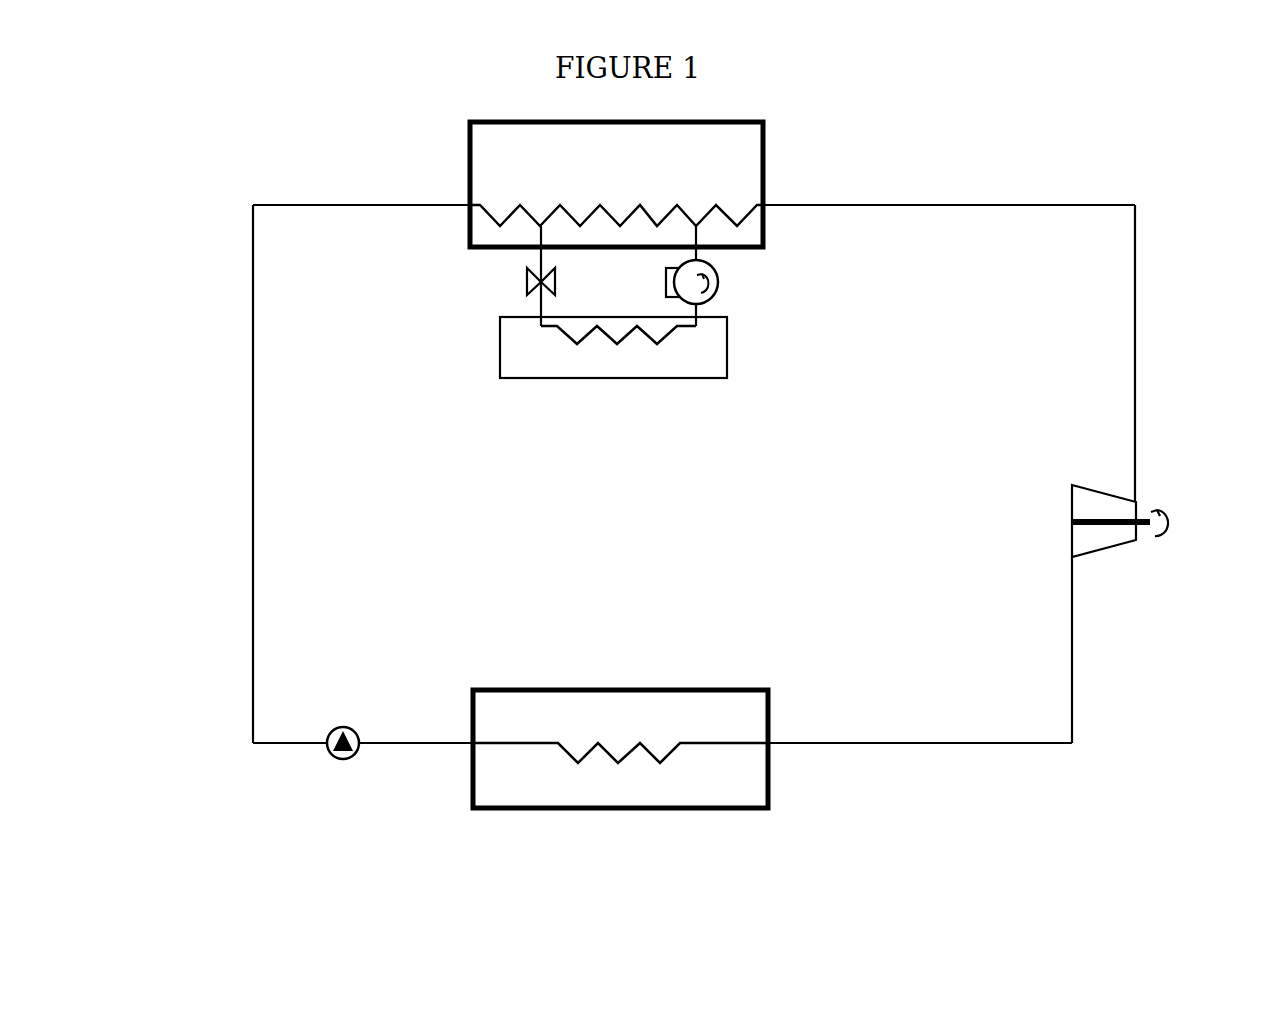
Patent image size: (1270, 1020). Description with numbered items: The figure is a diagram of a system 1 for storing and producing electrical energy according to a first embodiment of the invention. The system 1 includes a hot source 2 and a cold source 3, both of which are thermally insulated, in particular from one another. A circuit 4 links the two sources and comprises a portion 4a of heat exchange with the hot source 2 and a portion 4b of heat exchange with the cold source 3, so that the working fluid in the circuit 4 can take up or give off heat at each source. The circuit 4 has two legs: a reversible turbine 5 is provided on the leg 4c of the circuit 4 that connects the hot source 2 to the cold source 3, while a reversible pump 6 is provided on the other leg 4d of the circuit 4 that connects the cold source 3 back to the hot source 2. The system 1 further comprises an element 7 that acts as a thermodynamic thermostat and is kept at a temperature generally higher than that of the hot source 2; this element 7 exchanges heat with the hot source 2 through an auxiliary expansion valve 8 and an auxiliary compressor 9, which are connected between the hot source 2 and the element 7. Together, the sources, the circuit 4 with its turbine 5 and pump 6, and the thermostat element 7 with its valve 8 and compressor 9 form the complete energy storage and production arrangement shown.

The system 1 is at (962, 190).
The hot source 2 is at (766, 155).
The cold source 3 is at (772, 793).
The circuit 4 is at (1078, 204).
The portion of heat exchange with the hot source 4a is at (766, 222).
The portion of heat exchange with the cold source 4b is at (687, 742).
The leg of the circuit 4c is at (1136, 370).
The other leg of the circuit 4d is at (252, 468).
The reversible turbine 5 is at (1095, 527).
The reversible pump 6 is at (344, 727).
The element acting as a thermodynamic thermostat 7 is at (708, 379).
The auxiliary expansion valve 8 is at (527, 290).
The auxiliary compressor 9 is at (719, 293).